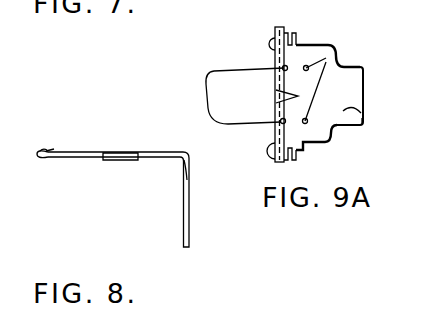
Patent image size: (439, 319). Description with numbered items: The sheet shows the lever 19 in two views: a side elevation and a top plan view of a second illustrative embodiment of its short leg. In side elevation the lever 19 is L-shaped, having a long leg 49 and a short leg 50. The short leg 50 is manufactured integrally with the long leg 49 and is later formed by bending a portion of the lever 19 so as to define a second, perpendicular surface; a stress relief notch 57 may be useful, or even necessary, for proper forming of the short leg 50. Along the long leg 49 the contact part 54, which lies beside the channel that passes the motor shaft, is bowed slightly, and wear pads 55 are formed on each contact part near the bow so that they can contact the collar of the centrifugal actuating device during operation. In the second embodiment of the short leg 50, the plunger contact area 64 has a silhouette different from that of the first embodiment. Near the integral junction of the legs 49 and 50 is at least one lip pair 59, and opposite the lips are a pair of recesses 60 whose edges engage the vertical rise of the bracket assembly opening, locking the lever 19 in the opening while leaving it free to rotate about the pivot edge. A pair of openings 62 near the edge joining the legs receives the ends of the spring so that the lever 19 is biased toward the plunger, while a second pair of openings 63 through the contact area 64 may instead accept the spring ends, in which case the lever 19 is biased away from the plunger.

In FIG. 8, the lever 19 is at (96, 149).
In FIG. 8, the long leg 49 is at (144, 150).
In FIG. 8, the short leg 50 is at (190, 193).
In FIG. 9A, the short leg 50 is at (364, 68).
In FIG. 8, the contact part 54 is at (44, 158).
In FIG. 8, the wear pads 55 is at (46, 149).
In FIG. 9A, the wear pads 55 is at (268, 44).
In FIG. 9A, the stress relief notch 57 is at (274, 94).
In FIG. 9A, the lip pair 59 is at (299, 44).
In FIG. 9A, the recesses 60 is at (290, 38).
In FIG. 9A, the openings 62 is at (213, 70).
In FIG. 9A, the openings 63 is at (347, 82).
In FIG. 9A, the contact area 64 is at (362, 125).